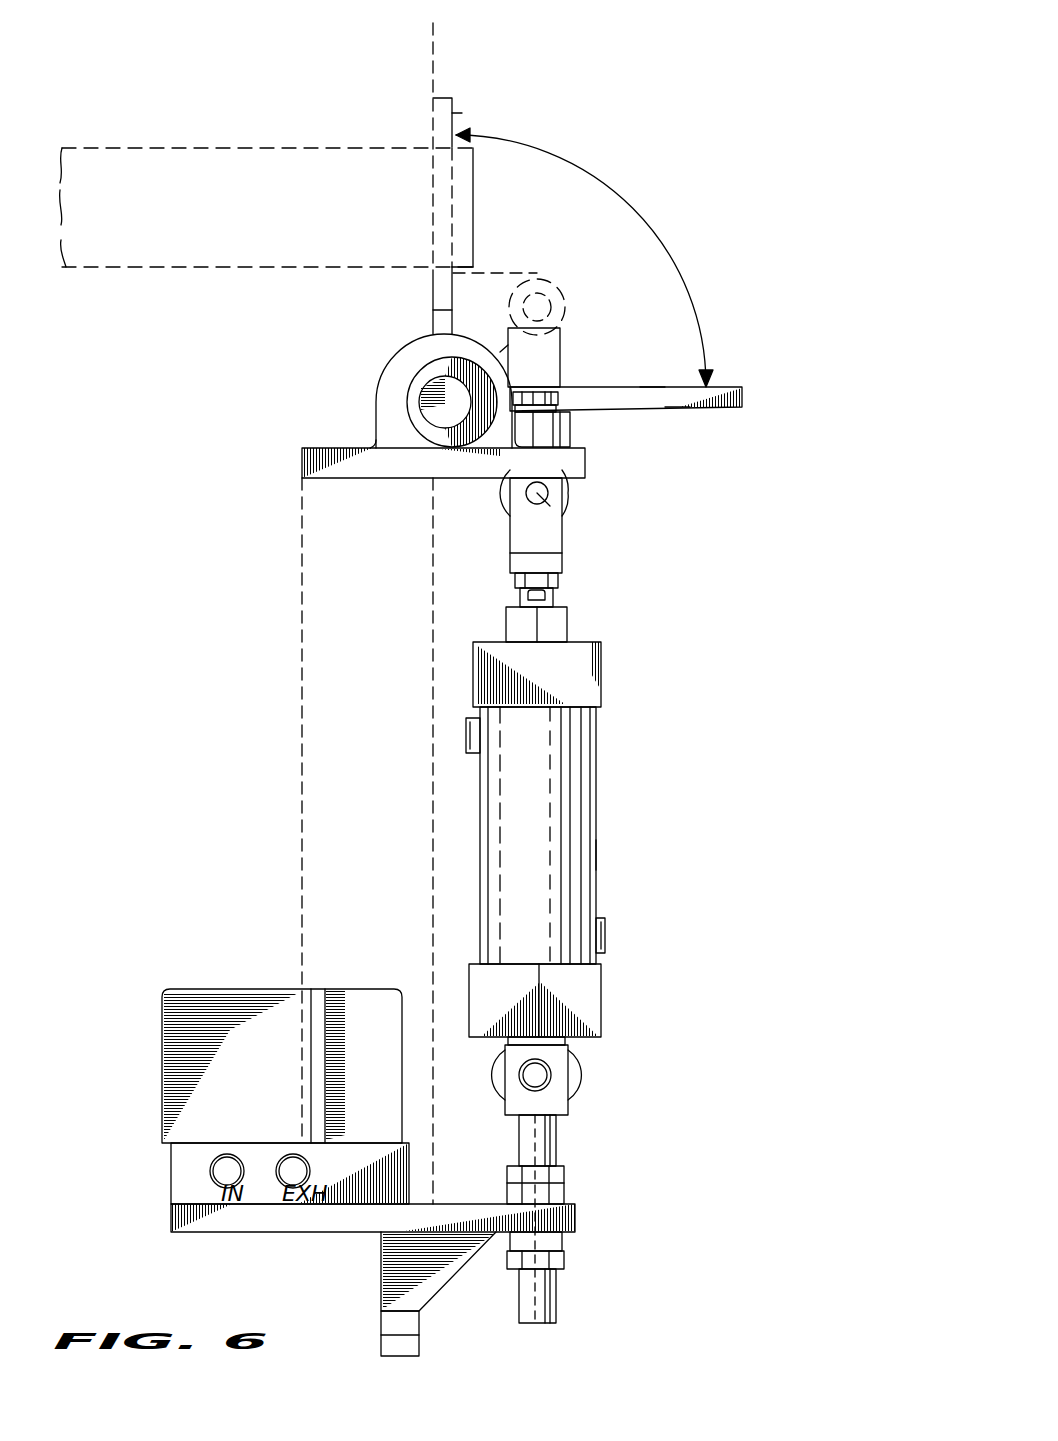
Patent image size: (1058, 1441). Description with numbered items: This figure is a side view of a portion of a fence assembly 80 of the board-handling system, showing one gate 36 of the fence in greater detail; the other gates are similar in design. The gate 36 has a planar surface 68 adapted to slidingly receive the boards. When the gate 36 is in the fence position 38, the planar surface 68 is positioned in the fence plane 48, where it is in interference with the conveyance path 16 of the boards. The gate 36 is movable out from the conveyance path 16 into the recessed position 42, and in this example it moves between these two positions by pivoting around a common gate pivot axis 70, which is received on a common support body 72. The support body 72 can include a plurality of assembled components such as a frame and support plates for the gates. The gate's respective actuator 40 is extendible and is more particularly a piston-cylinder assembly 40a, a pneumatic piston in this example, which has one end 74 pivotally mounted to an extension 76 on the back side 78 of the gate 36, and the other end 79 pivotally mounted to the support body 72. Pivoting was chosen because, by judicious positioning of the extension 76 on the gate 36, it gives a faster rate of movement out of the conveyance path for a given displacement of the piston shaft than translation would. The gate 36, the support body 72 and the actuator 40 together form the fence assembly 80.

The conveyance path 16 is at (266, 207).
The gate 36 is at (615, 410).
The fence position 38 is at (470, 108).
The actuator 40 is at (600, 777).
The piston-cylinder assembly 40a is at (596, 854).
The recessed position 42 is at (742, 406).
The fence plane 48 is at (433, 62).
The planar surface 68 is at (652, 386).
The gate pivot axis 70 is at (425, 403).
The support body 72 is at (310, 462).
The one end of the piston 74 is at (565, 565).
The extension 76 is at (565, 495).
The back side of the gate 78 is at (675, 410).
The other end of the piston 79 is at (557, 1073).
The fence assembly 80 is at (722, 77).